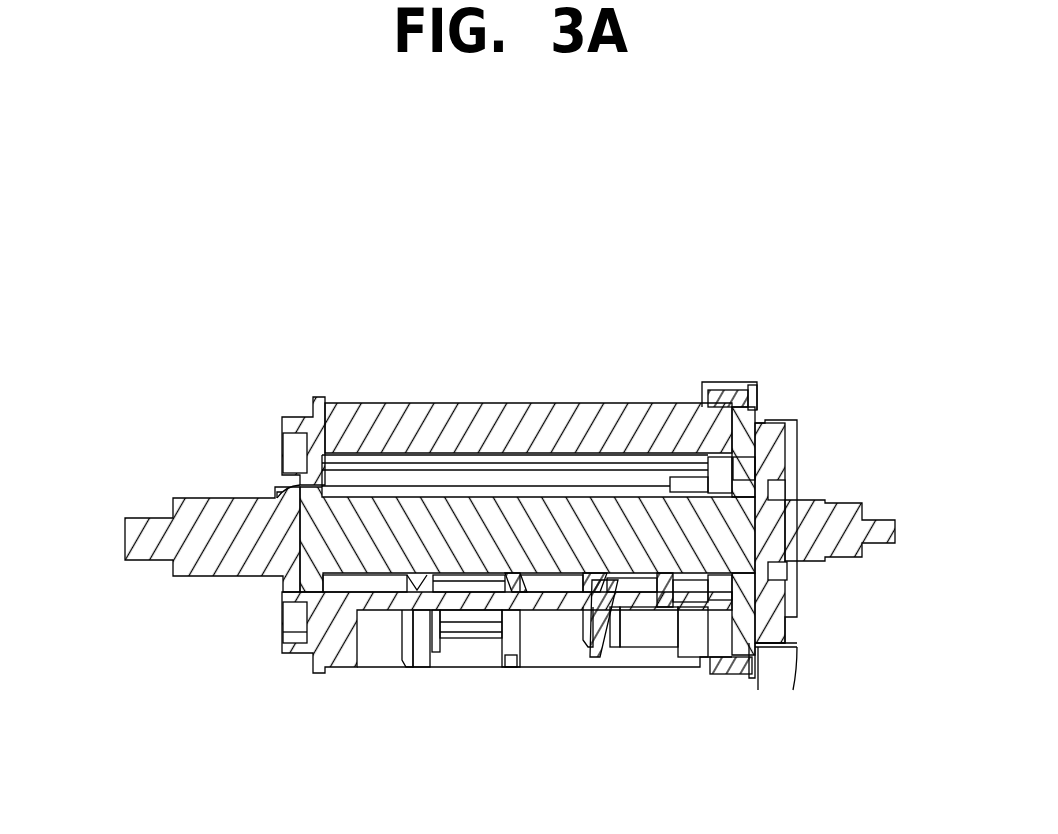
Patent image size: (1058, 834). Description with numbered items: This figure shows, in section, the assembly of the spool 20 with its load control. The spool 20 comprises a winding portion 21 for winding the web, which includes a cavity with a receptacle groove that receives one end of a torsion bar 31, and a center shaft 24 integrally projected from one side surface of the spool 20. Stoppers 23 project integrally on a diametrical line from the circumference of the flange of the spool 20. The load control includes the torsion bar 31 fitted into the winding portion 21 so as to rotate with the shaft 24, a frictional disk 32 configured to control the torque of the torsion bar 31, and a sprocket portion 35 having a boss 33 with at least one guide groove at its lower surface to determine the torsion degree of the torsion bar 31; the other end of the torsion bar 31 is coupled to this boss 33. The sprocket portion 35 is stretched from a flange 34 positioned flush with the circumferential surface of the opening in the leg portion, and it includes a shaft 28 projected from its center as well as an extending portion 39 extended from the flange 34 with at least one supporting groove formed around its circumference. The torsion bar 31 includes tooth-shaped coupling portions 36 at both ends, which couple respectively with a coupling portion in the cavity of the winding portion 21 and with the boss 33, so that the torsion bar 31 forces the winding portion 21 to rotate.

The spool 20 is at (465, 332).
The winding portion 21 is at (424, 657).
The stoppers 23 is at (713, 383).
The center shaft 24 is at (155, 560).
The shaft 28 is at (848, 503).
The torsion bar 31 is at (500, 667).
The frictional disk 32 is at (740, 383).
The boss 33 is at (757, 412).
The flange 34 is at (760, 647).
The sprocket portion 35 is at (788, 650).
The coupling portions 36 is at (290, 490).
The extending portion 39 is at (747, 678).